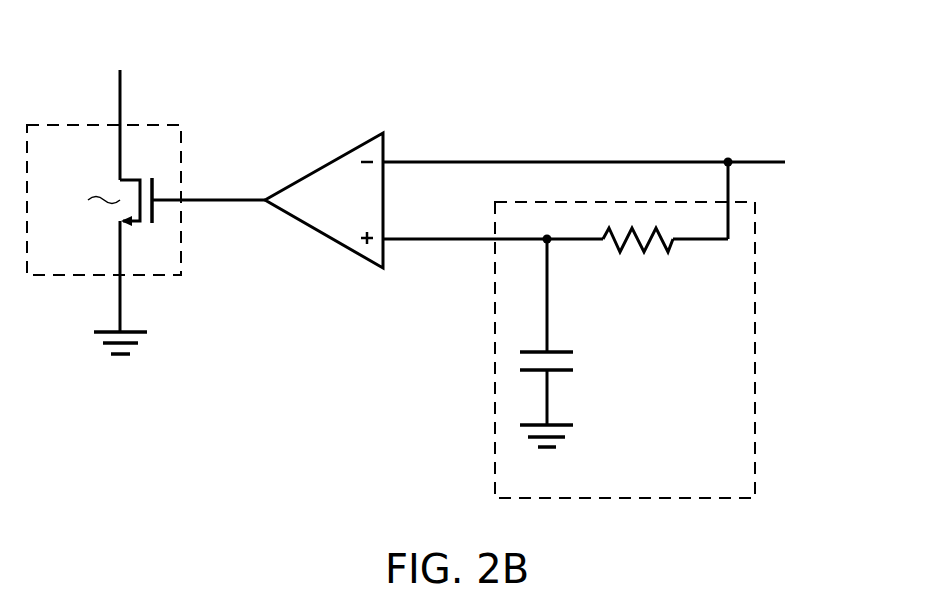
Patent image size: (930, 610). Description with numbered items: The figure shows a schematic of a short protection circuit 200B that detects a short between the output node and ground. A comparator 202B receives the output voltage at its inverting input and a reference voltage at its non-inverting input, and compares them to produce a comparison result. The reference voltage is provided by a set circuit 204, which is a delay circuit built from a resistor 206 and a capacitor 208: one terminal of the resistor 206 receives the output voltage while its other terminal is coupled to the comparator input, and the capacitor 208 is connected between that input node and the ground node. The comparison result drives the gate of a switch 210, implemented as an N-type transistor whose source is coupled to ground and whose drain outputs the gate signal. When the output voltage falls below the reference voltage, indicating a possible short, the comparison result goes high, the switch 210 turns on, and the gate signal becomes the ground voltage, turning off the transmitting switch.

The short protection circuit 200B is at (882, 67).
The comparator 202B is at (378, 213).
The set circuit 204 is at (755, 360).
The resistor 206 is at (655, 254).
The capacitor 208 is at (575, 361).
The switch 210 is at (181, 262).